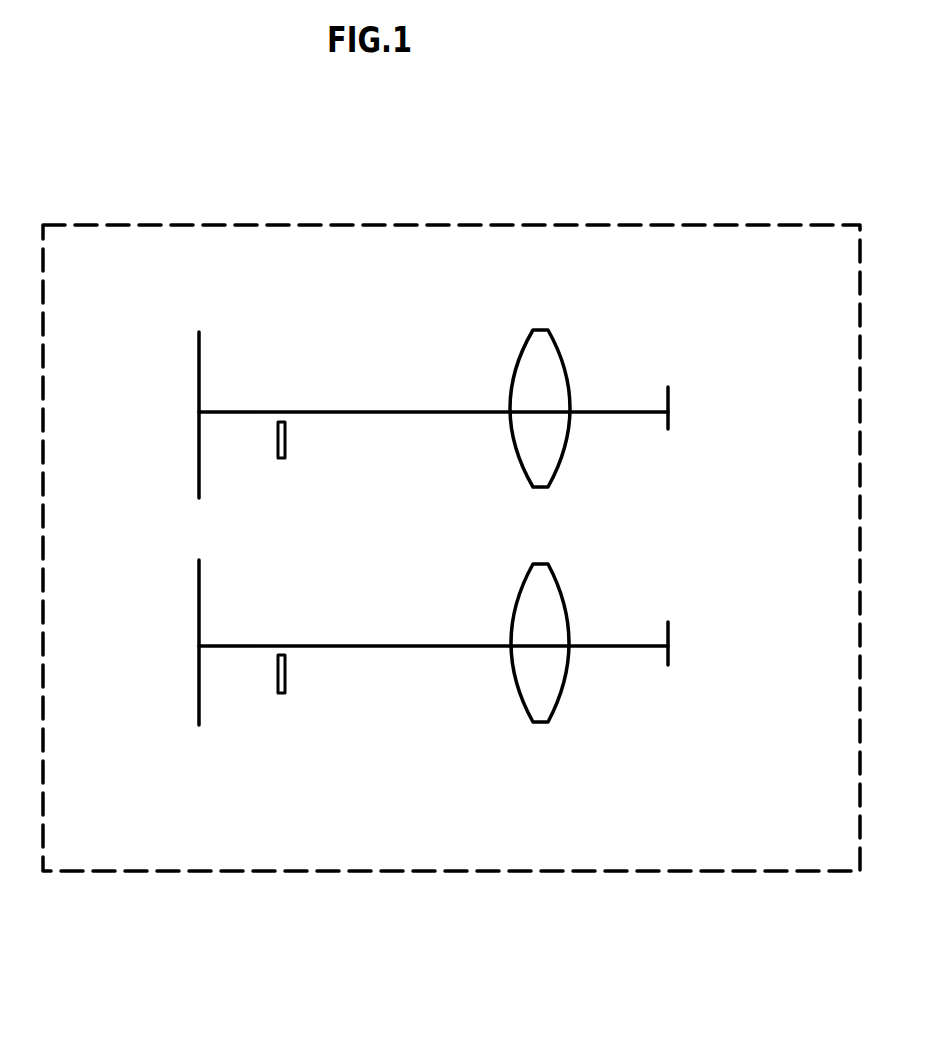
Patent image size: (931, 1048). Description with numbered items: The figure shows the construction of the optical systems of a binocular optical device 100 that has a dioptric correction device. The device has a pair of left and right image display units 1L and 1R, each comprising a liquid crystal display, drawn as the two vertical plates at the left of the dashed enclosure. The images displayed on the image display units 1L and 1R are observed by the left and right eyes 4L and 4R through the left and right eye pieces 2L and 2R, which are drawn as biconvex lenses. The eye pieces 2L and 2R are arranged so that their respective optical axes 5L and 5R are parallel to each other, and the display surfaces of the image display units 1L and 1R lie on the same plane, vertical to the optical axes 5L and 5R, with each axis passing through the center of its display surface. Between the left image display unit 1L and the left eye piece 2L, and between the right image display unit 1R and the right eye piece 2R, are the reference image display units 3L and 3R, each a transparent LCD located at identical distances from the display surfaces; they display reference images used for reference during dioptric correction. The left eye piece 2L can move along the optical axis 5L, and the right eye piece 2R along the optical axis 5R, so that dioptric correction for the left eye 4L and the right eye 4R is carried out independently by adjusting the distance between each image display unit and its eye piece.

The binocular optical device 100 is at (620, 871).
The right image display unit 1R is at (199, 462).
The right eye piece 2R is at (555, 340).
The right reference image display unit 3R is at (282, 458).
The right eye 4R is at (672, 412).
The right optical axis 5R is at (402, 412).
The left image display unit 1L is at (199, 672).
The left eye piece 2L is at (540, 722).
The left reference image display unit 3L is at (282, 693).
The left eye 4L is at (672, 645).
The left optical axis 5L is at (408, 646).